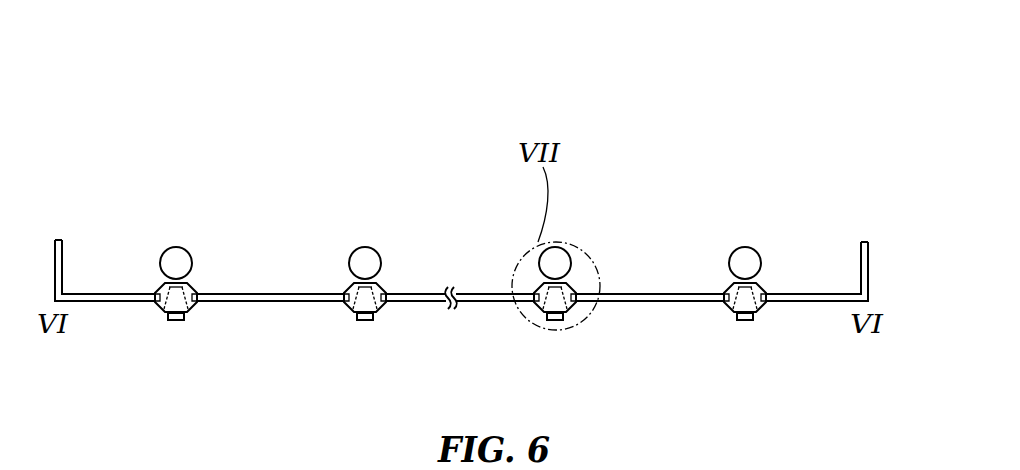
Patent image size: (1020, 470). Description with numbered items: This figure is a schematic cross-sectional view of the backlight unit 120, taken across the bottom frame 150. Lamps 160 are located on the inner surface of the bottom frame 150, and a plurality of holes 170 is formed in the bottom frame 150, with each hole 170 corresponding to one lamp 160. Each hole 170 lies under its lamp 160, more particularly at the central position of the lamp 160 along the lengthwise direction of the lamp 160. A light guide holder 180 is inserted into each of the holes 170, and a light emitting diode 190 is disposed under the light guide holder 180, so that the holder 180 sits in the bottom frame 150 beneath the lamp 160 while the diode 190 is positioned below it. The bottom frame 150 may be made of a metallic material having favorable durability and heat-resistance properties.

The backlight unit 120 is at (643, 111).
The bottom frame 150 is at (869, 255).
The lamp 160 is at (742, 255).
The hole 170 is at (197, 282).
The light guide holder 180 is at (348, 310).
The light emitting diode 190 is at (367, 321).